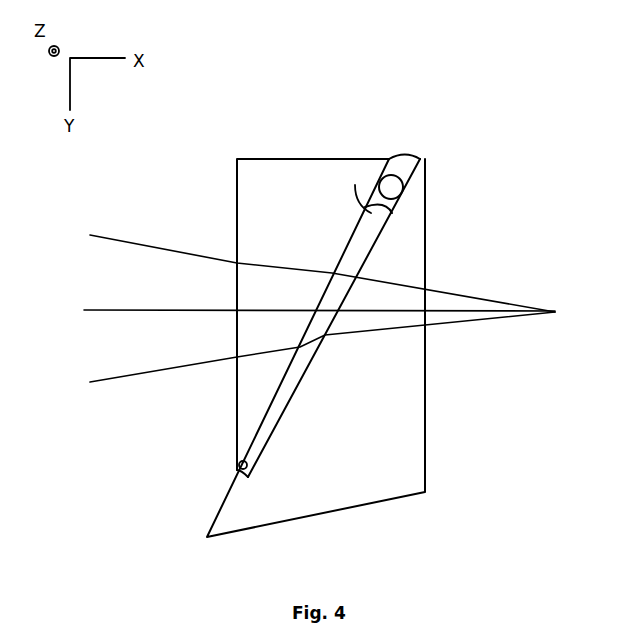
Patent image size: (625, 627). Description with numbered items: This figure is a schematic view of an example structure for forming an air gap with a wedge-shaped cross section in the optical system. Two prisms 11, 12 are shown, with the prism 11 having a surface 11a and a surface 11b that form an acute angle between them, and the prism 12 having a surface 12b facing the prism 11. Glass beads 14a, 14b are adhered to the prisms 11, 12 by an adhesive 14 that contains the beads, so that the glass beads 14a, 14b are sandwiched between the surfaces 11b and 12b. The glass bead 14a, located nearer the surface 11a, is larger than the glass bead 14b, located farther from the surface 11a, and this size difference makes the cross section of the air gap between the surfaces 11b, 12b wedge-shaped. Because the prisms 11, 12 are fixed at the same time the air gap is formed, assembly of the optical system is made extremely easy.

The prism 11 is at (341, 497).
The surface 11a is at (427, 263).
The surface 11b is at (387, 232).
The prism 12 is at (290, 175).
The surface 12b is at (355, 185).
The adhesive 14 is at (408, 170).
The glass bead 14a is at (396, 188).
The glass bead 14b is at (239, 464).